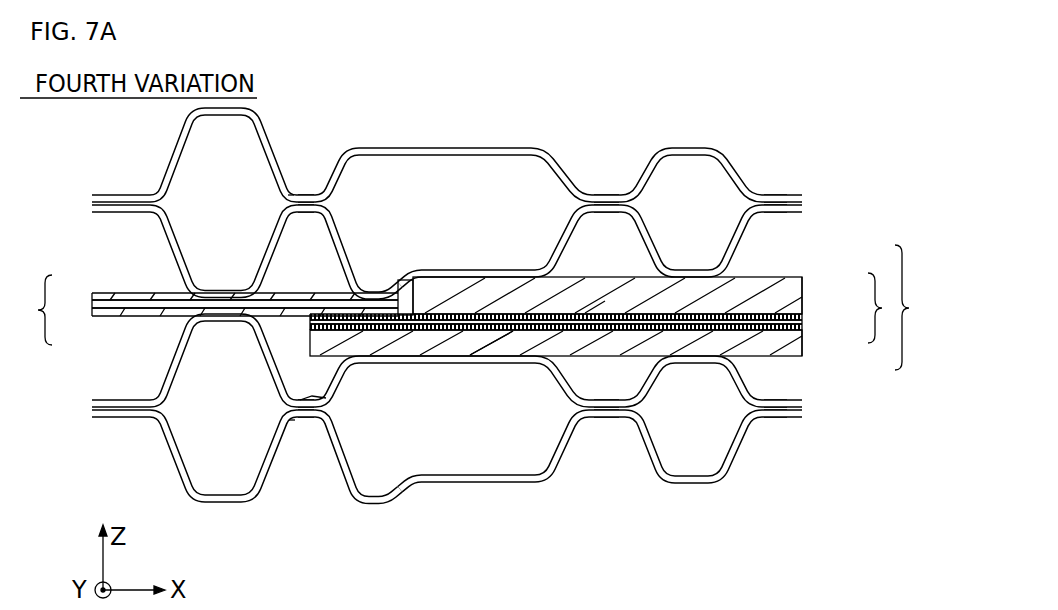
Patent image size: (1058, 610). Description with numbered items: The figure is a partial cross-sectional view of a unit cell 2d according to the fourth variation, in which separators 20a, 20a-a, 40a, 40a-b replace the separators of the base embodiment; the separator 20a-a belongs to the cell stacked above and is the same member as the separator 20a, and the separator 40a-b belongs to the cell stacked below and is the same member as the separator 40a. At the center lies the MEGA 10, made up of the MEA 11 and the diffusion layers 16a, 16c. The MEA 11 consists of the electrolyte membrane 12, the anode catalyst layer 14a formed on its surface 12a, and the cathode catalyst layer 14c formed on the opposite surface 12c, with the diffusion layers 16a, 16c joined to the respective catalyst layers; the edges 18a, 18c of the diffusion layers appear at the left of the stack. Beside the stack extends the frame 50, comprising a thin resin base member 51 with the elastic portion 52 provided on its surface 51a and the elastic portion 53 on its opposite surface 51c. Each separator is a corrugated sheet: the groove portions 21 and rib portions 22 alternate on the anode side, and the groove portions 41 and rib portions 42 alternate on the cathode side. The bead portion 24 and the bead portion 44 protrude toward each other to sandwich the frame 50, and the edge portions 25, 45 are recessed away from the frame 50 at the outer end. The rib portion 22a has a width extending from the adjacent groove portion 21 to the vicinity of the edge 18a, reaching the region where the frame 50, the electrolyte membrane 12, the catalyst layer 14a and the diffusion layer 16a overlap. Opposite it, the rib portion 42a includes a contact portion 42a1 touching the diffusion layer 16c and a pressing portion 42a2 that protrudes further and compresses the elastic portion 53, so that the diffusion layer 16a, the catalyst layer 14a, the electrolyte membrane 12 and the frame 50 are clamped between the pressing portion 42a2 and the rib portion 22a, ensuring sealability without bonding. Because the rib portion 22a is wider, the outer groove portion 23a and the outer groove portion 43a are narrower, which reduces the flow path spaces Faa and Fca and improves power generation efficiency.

The MEGA 10 is at (622, 310).
The membrane electrode assembly 11 is at (608, 313).
The electrolyte membrane 12 is at (795, 322).
The surface of the electrolyte membrane 12a is at (478, 345).
The surface of the electrolyte membrane 12c is at (597, 295).
The anode catalyst layer 14a is at (795, 327).
The cathode catalyst layer 14c is at (795, 317).
The diffusion layer 16a is at (795, 345).
The diffusion layer 16c is at (792, 292).
The edge of the diffusion layer 18a is at (303, 400).
The edge of the diffusion layer 18c is at (400, 282).
The separator 20a is at (803, 403).
The separator 20a-a is at (803, 198).
The groove portion 21 is at (612, 195).
The rib portion 22 is at (702, 148).
The rib portion 22a is at (520, 148).
The outer groove portion 23a is at (310, 195).
The bead portion 24 is at (228, 116).
The edge portion 25 is at (112, 194).
The unit cell 2d is at (900, 242).
The separator 40a is at (803, 209).
The separator 40a-b is at (803, 414).
The groove portion 41 is at (617, 213).
The rib portion 42 is at (690, 270).
The rib portion 42a is at (512, 270).
The contact portion 42a1 is at (424, 270).
The pressing portion 42a2 is at (373, 292).
The outer groove portion 43a is at (308, 213).
The bead portion 44 is at (234, 290).
The edge portion 45 is at (112, 215).
The frame 50 is at (208, 307).
The base member 51 is at (226, 307).
The surface of the base member 51a is at (140, 320).
The surface of the base member 51c is at (152, 292).
The elastic portion 52 is at (92, 313).
The elastic portion 53 is at (92, 296).
The flow path space Fca is at (291, 195).
The flow path space Faa is at (292, 420).